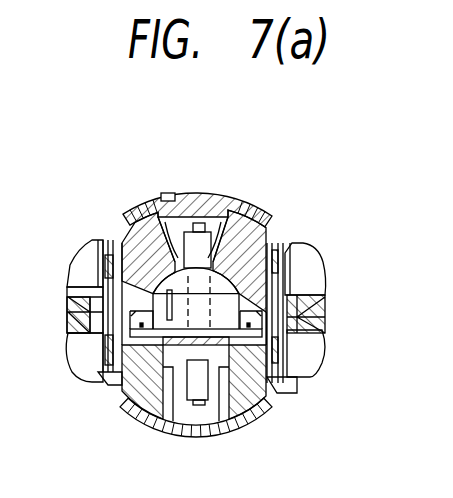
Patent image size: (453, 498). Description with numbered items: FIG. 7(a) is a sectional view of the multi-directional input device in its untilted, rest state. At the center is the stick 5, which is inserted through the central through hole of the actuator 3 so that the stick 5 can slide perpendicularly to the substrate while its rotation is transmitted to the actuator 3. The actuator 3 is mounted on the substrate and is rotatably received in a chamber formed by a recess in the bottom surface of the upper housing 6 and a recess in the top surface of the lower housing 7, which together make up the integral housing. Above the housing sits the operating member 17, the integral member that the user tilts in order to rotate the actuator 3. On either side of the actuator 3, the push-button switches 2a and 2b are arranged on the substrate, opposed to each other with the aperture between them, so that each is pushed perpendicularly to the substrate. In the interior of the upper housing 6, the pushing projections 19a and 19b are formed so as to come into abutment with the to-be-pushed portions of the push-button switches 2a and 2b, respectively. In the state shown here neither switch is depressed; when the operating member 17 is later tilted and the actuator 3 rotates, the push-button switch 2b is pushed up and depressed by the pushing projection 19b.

The push-button switch 2a is at (92, 337).
The push-button switch 2b is at (323, 331).
The actuator 3 is at (157, 338).
The stick 5 is at (222, 212).
The upper housing 6 is at (268, 238).
The lower housing 7 is at (260, 380).
The operating member 17 is at (248, 209).
The pushing projection 19a is at (121, 240).
The pushing projection 19b is at (326, 262).